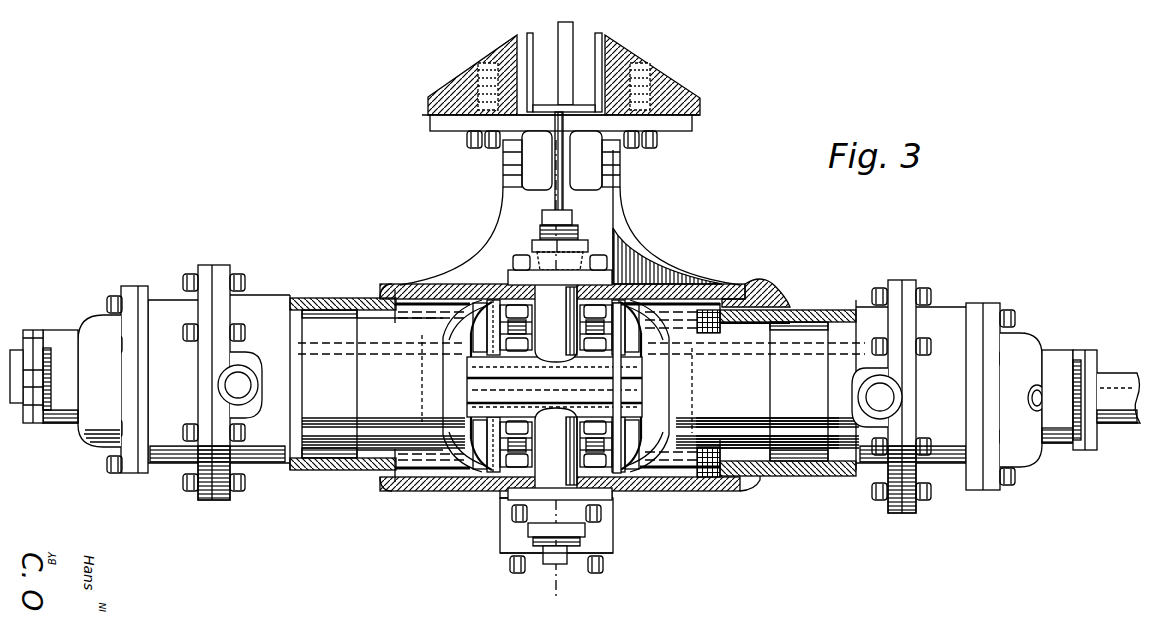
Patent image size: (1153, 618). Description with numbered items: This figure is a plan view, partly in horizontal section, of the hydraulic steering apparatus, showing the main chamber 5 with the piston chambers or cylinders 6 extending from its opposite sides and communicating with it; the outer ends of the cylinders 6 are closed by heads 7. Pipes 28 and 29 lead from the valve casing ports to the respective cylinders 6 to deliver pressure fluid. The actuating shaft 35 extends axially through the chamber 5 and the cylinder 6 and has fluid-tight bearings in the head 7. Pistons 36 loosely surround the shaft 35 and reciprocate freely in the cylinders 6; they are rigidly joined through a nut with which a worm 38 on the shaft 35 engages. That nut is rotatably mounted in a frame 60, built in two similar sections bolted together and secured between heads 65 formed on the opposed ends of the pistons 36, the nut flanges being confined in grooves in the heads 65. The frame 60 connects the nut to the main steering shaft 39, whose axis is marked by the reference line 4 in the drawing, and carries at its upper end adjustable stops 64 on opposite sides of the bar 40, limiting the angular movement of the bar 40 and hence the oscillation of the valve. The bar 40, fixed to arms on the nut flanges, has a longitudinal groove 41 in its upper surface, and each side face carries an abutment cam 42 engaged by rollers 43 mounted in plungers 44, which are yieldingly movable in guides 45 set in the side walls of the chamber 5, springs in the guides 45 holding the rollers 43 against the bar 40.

The vertical pivot shaft 4 is at (562, 364).
The main chamber 5 is at (437, 470).
The piston chamber 6 is at (305, 300).
The head 7 is at (212, 293).
The pipe 28 is at (222, 386).
The pipe 29 is at (862, 392).
The shaft 35 is at (1110, 417).
The piston 36 is at (340, 397).
The worm 38 is at (637, 497).
The main steering shaft 39 is at (575, 100).
The bar 40 is at (643, 405).
The longitudinal groove 41 is at (716, 292).
The abutment cam 42 is at (542, 363).
The roller 43 is at (597, 292).
The plunger 44 is at (587, 283).
The guide 45 is at (567, 290).
The frame 60 is at (455, 333).
The adjustable stop 64 is at (513, 260).
The head 65 is at (500, 313).